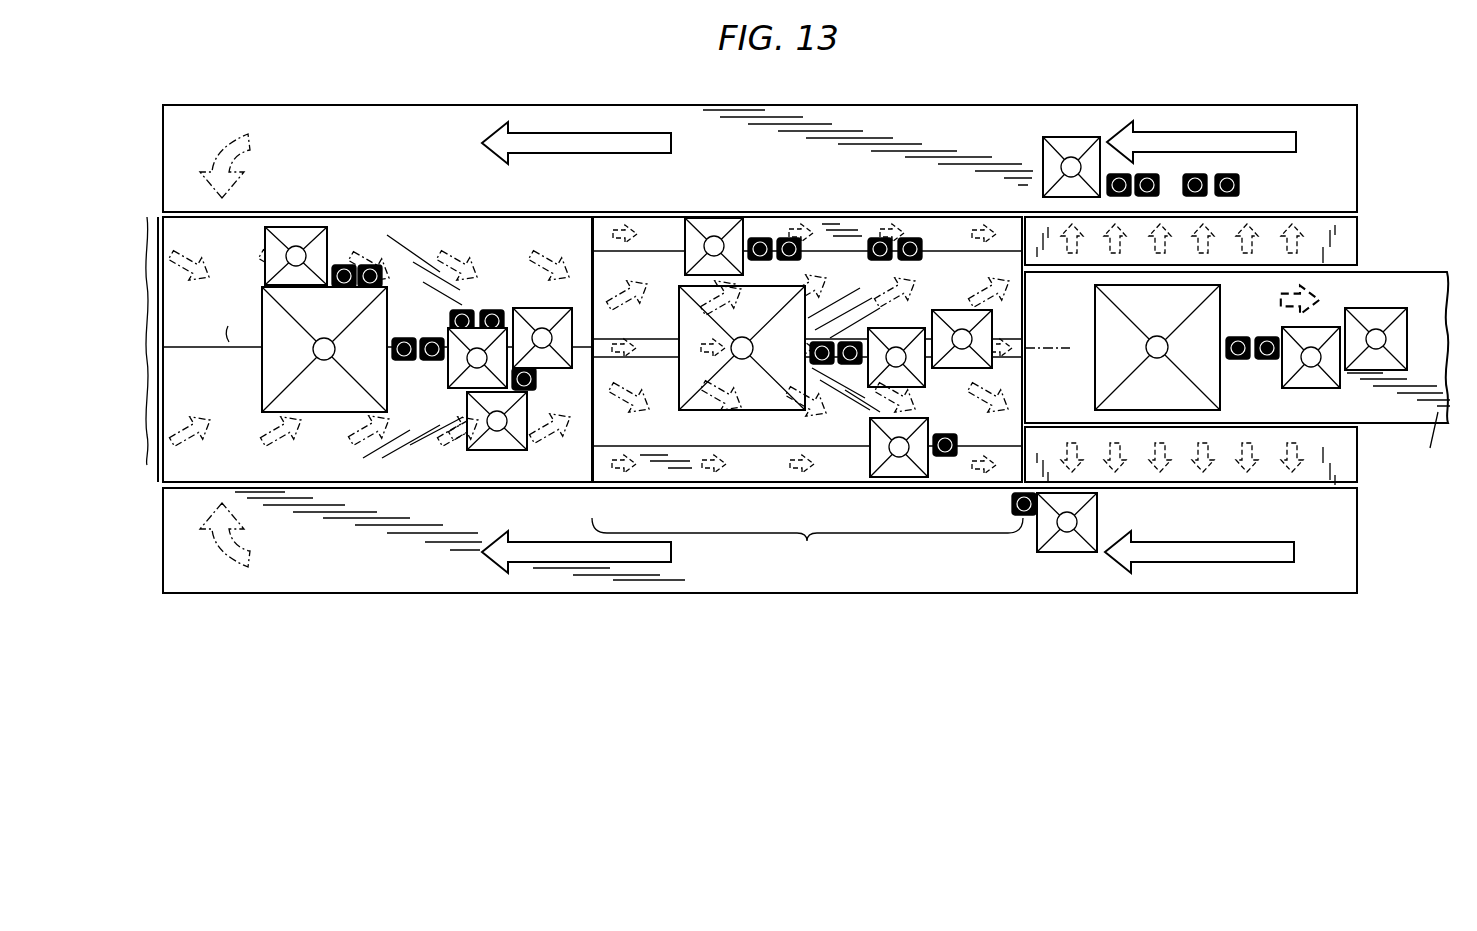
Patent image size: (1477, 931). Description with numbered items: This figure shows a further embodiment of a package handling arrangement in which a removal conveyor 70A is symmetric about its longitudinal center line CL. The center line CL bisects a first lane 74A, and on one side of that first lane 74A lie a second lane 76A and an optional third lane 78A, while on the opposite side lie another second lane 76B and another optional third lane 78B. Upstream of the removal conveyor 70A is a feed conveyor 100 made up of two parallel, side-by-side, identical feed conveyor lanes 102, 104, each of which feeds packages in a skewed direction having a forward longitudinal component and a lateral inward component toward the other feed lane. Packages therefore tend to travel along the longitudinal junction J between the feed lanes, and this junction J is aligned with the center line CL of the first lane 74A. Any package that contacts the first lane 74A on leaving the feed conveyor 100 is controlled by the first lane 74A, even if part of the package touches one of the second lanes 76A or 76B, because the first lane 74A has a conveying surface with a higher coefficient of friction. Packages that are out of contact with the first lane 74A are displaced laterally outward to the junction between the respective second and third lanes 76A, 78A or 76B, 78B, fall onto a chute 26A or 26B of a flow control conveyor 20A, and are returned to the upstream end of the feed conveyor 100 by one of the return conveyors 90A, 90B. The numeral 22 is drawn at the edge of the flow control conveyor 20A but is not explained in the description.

The return conveyor 90A is at (1348, 148).
The return conveyor 90B is at (365, 560).
The feed conveyor 100 is at (372, 213).
The feed conveyor lane 102 is at (193, 235).
The feed conveyor lane 104 is at (178, 392).
The longitudinal junction J is at (230, 323).
The removal conveyor 70A is at (807, 394).
The third lane 78A is at (665, 233).
The second lane 76A is at (608, 268).
The first lane 74A is at (659, 352).
The second lane 76B is at (610, 427).
The third lane 78B is at (605, 473).
The chute 26A is at (1350, 241).
The chute 26B is at (1350, 456).
The flow control conveyor 20A is at (1408, 268).
The conveyor end 22 is at (1431, 439).
The longitudinal center line CL is at (1057, 345).